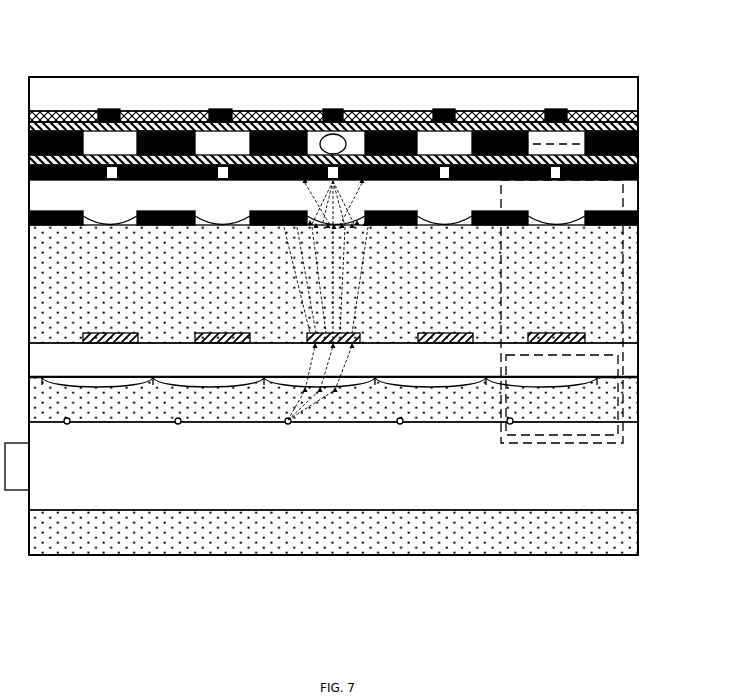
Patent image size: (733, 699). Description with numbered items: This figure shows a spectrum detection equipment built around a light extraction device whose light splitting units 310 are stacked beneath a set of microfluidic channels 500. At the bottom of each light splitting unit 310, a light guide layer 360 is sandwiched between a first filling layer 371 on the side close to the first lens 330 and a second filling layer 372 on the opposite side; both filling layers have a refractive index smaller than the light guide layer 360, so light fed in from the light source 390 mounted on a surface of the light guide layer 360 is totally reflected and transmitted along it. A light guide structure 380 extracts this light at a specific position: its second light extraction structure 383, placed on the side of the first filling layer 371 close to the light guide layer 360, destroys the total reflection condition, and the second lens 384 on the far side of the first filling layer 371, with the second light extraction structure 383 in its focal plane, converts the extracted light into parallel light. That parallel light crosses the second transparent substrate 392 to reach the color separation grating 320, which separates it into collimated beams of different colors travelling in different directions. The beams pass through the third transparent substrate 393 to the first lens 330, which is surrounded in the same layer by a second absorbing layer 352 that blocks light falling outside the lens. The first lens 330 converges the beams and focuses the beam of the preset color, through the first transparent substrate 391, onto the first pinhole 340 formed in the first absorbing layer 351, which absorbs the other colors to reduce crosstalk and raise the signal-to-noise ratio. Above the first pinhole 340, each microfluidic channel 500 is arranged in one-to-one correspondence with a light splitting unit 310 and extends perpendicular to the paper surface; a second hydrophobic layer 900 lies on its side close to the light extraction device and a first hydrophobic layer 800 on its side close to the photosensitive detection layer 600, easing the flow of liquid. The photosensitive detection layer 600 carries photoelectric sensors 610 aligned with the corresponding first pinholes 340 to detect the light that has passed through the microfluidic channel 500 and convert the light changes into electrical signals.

The light splitting unit 310 is at (333, 285).
The first hydrophobic layer 800 is at (333, 69).
The first transparent substrate 391 is at (333, 69).
The photosensitive detection layer 600 is at (332, 69).
The first absorbing layer 351 is at (333, 92).
The microfluidic channel 500 is at (333, 85).
The photoelectric sensor 610 is at (350, 106).
The first pinhole 340 is at (333, 98).
The second hydrophobic layer 900 is at (333, 115).
The second absorbing layer 352 is at (333, 139).
The first lens 330 is at (334, 139).
The third transparent substrate 393 is at (333, 423).
The color separation grating 320 is at (334, 461).
The second transparent substrate 392 is at (333, 482).
The first filling layer 371 is at (333, 483).
The second lens 384 is at (345, 201).
The light guide layer 360 is at (333, 521).
The second filling layer 372 is at (333, 565).
The light source 390 is at (52, 532).
The light guide structure 380 is at (583, 384).
The second light extraction structure 383 is at (563, 488).